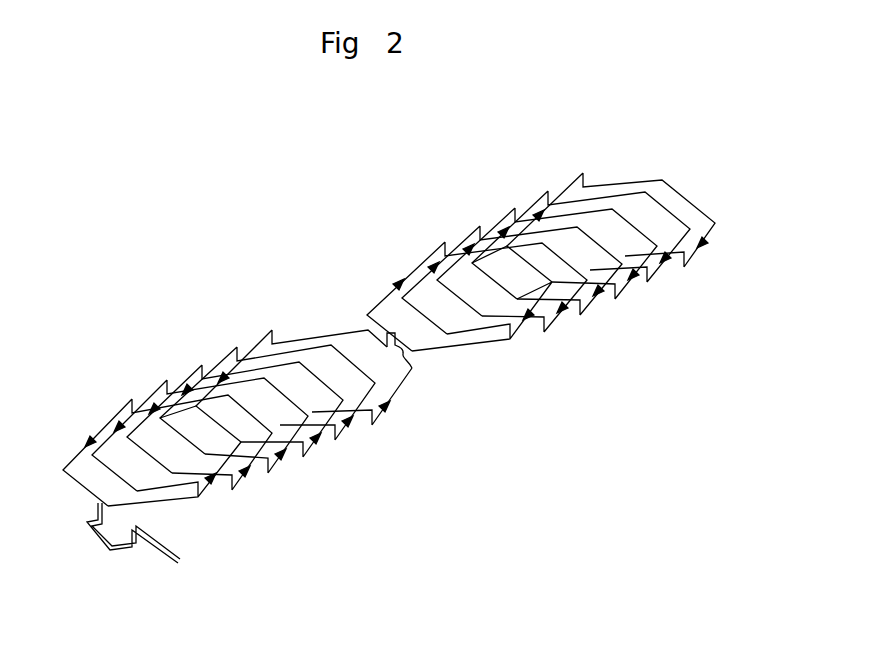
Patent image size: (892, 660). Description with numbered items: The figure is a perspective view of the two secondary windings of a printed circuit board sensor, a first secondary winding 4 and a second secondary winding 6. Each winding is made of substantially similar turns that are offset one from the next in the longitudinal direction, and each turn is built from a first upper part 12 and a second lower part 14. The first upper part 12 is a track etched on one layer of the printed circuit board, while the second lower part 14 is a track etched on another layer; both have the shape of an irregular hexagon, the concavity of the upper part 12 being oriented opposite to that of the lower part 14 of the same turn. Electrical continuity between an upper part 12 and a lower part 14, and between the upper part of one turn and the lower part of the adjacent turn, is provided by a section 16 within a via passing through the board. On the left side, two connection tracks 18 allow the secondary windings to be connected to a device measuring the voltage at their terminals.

The first secondary winding 4 is at (327, 520).
The second secondary winding 6 is at (473, 170).
The first upper part 12 is at (150, 397).
The second lower part 14 is at (287, 403).
The section 16 is at (176, 390).
The connection track 18 is at (172, 552).